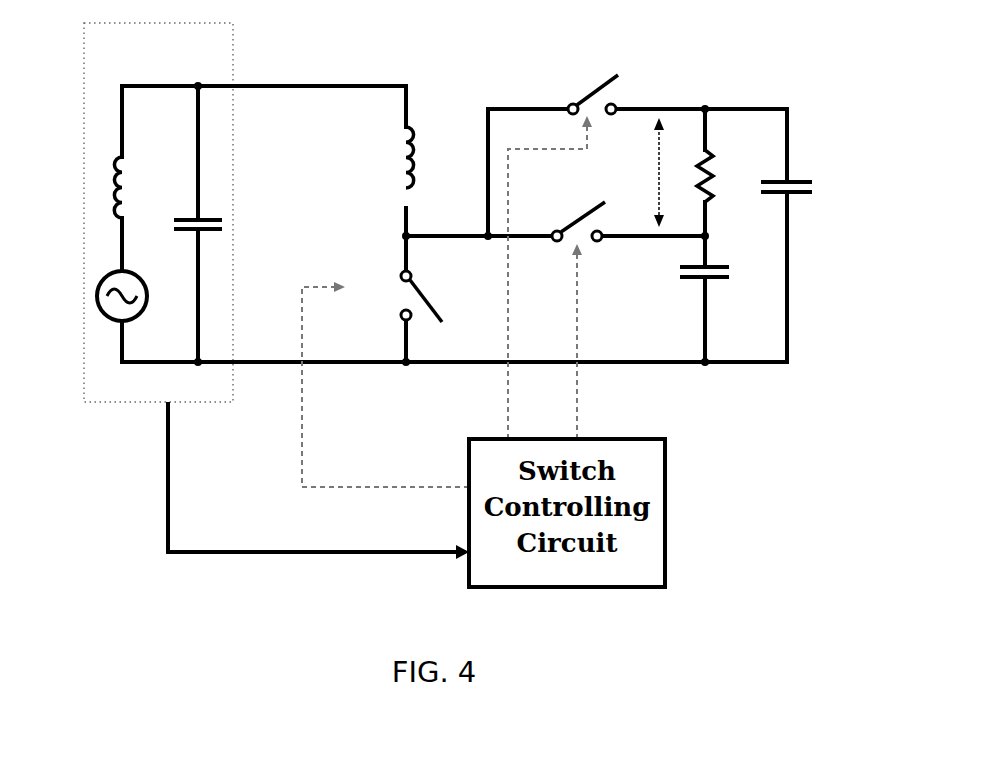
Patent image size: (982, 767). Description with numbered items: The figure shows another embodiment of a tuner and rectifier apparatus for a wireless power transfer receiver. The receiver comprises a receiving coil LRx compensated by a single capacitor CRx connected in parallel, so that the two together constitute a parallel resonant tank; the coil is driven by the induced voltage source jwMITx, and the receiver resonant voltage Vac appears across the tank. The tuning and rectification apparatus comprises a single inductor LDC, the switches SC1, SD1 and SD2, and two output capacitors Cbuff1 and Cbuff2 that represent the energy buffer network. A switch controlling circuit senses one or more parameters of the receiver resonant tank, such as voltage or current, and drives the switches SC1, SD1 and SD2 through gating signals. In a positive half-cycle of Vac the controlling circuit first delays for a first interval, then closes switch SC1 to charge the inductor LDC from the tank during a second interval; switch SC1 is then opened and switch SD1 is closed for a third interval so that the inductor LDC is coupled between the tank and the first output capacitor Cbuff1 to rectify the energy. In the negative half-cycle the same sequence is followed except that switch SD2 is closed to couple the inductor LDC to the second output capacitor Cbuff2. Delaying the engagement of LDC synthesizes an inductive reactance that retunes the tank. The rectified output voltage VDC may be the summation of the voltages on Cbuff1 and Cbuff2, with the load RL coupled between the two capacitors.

The receiving coil LRx is at (94, 187).
The compensating capacitor CRx is at (218, 208).
The receiver resonant voltage Vac is at (173, 52).
The induced voltage source jwMITx is at (73, 304).
The inductor LDC is at (387, 157).
The switch SC1 is at (396, 296).
The switch SD1 is at (565, 214).
The switch SD2 is at (582, 84).
The rectified output voltage VDC is at (656, 172).
The load RL is at (719, 176).
The first output capacitor Cbuff1 is at (677, 286).
The second output capacitor Cbuff2 is at (811, 170).